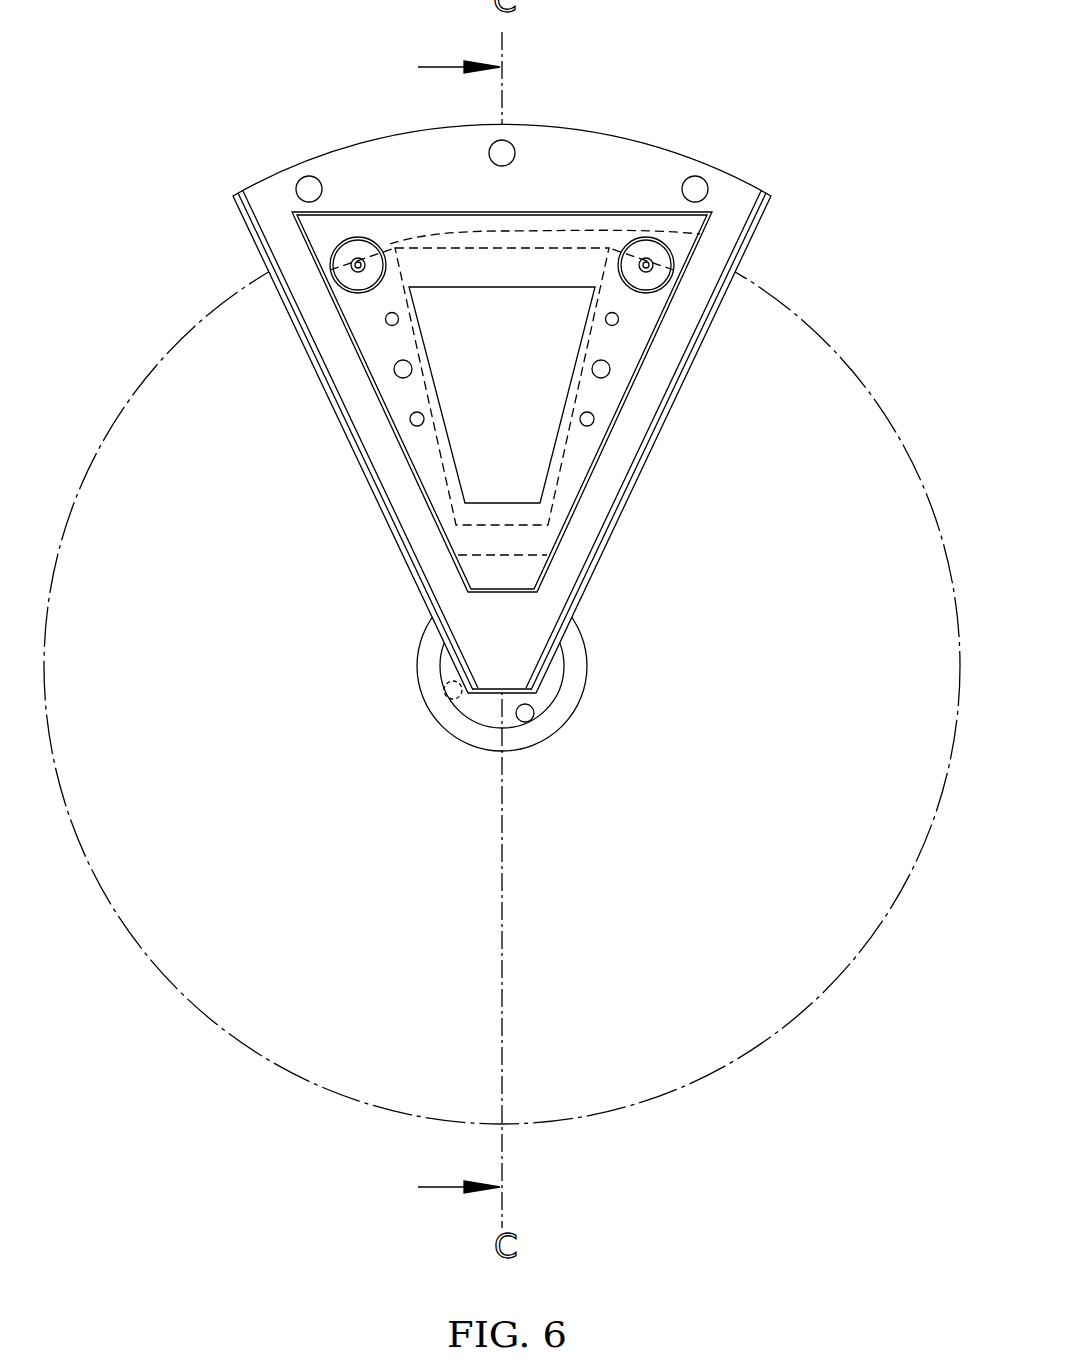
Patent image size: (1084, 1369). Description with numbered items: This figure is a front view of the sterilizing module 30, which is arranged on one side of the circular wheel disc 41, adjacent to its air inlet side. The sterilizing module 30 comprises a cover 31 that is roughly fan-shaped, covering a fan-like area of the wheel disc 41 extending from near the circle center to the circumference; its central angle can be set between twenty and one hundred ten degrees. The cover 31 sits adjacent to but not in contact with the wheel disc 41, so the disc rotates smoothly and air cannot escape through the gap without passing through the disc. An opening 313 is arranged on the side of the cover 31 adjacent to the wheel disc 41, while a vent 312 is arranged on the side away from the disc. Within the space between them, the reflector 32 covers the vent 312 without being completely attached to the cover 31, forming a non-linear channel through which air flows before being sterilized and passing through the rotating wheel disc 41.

The sterilizing module 30 is at (197, 167).
The cover 31 is at (753, 187).
The reflector 32 is at (487, 249).
The vent 312 is at (430, 286).
The opening 313 is at (700, 234).
The wheel disc 41 is at (768, 1038).